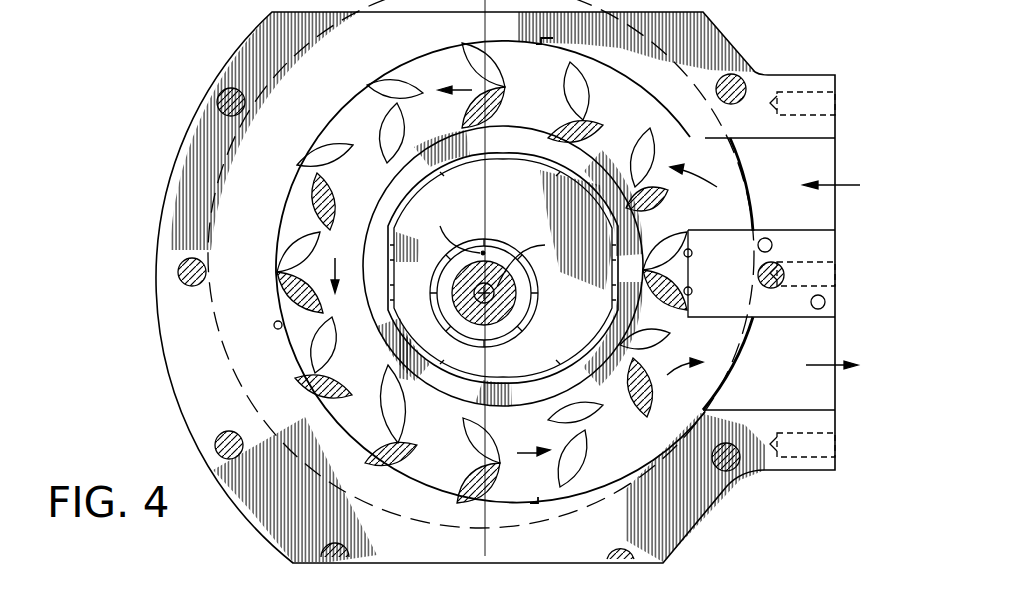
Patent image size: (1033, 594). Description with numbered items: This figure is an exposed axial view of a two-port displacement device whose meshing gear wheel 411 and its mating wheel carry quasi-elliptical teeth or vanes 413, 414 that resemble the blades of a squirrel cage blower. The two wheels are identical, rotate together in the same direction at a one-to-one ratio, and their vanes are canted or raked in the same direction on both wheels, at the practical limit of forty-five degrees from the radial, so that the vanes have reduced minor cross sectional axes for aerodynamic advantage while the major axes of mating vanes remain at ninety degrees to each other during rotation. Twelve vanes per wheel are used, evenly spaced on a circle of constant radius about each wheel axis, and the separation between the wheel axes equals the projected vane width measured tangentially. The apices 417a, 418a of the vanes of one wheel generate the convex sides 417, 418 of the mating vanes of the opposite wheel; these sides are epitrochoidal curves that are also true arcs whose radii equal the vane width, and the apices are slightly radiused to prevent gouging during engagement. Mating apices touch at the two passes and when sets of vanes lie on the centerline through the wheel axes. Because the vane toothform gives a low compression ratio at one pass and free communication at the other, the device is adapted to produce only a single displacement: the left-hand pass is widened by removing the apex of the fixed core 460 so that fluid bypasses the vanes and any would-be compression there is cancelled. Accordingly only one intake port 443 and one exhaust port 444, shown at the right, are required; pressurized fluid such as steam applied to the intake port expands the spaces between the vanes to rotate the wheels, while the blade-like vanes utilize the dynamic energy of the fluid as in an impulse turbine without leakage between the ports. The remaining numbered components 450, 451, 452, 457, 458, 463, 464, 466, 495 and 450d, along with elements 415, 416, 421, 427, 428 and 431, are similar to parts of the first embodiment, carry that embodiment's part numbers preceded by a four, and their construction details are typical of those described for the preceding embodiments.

The pump housing 450 is at (250, 508).
The housing cylindrical wall 451 is at (285, 197).
The bolt hole 495 is at (220, 88).
The seal slot 452 is at (276, 326).
The fixed core 460 is at (543, 213).
The cam ring section 463 is at (427, 390).
The rotor ring 464 is at (465, 407).
The rotor shaft 466 is at (513, 303).
The quasi-elliptical vane 413 is at (406, 97).
The quasi-elliptical vane 414 is at (484, 295).
The vane 415 is at (586, 92).
The vane 416 is at (587, 134).
The inlet chamber 427 is at (550, 107).
The vane pivot 457 is at (277, 272).
The vane apex 417a is at (335, 359).
The convex side 418 is at (330, 400).
The vane apex 418a is at (438, 442).
The outlet chamber 428 is at (453, 479).
The convex side 417 is at (552, 422).
The meshing gear wheel 411 is at (637, 442).
The vane pivot 458 is at (690, 272).
The inlet passage 421 is at (732, 177).
The intake port 443 is at (825, 160).
The exhaust port 444 is at (828, 338).
The outlet passage 431 is at (777, 394).
The housing port block 450d is at (835, 250).